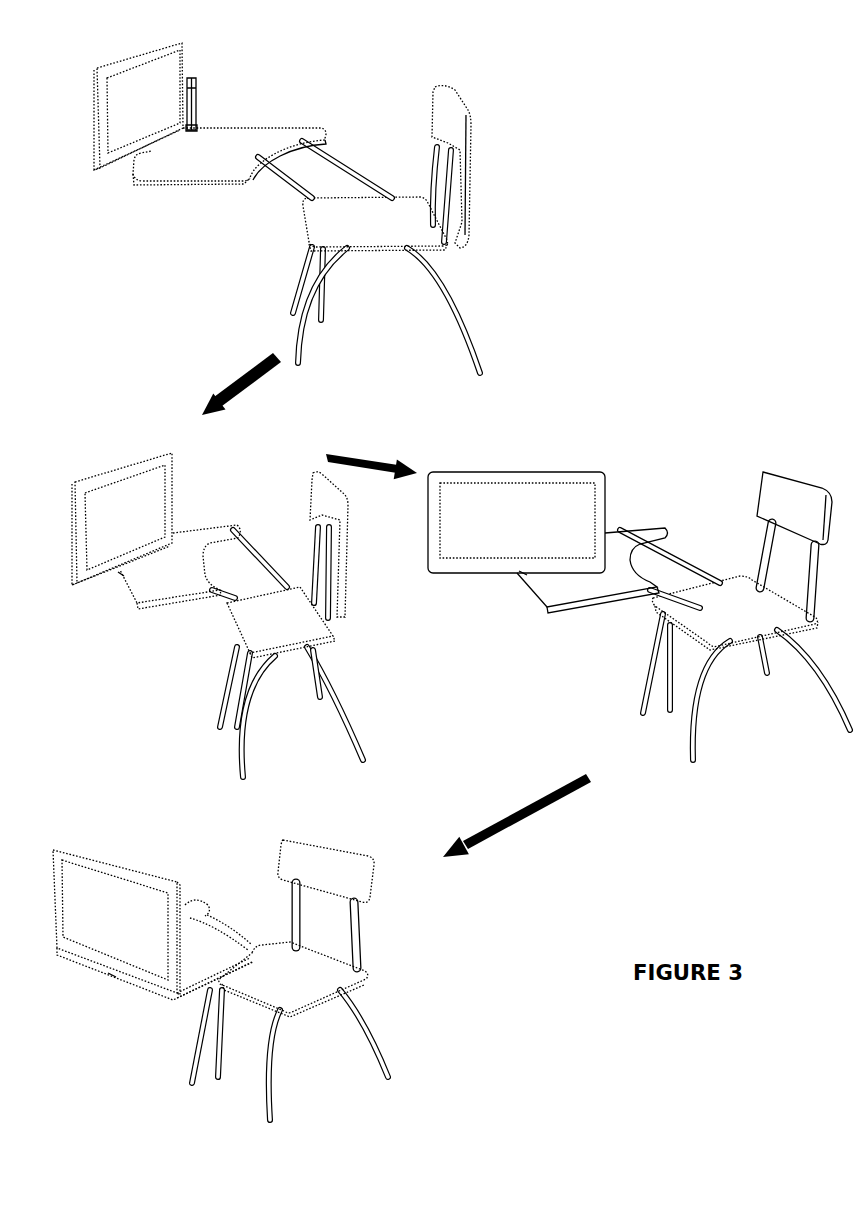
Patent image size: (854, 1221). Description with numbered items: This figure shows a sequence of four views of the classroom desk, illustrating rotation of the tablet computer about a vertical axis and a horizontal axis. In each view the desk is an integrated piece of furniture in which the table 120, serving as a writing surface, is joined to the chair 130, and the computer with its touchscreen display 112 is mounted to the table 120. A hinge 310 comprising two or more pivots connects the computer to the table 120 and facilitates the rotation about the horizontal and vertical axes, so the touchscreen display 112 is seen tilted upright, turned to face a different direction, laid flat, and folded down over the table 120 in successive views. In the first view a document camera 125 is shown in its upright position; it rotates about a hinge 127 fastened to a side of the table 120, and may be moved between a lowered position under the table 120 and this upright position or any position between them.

The touchscreen display 112 is at (126, 112).
The table 120 is at (204, 168).
The document camera 125 is at (198, 66).
The hinge 127 is at (208, 122).
The chair 130 is at (371, 238).
The hinge 310 is at (114, 579).